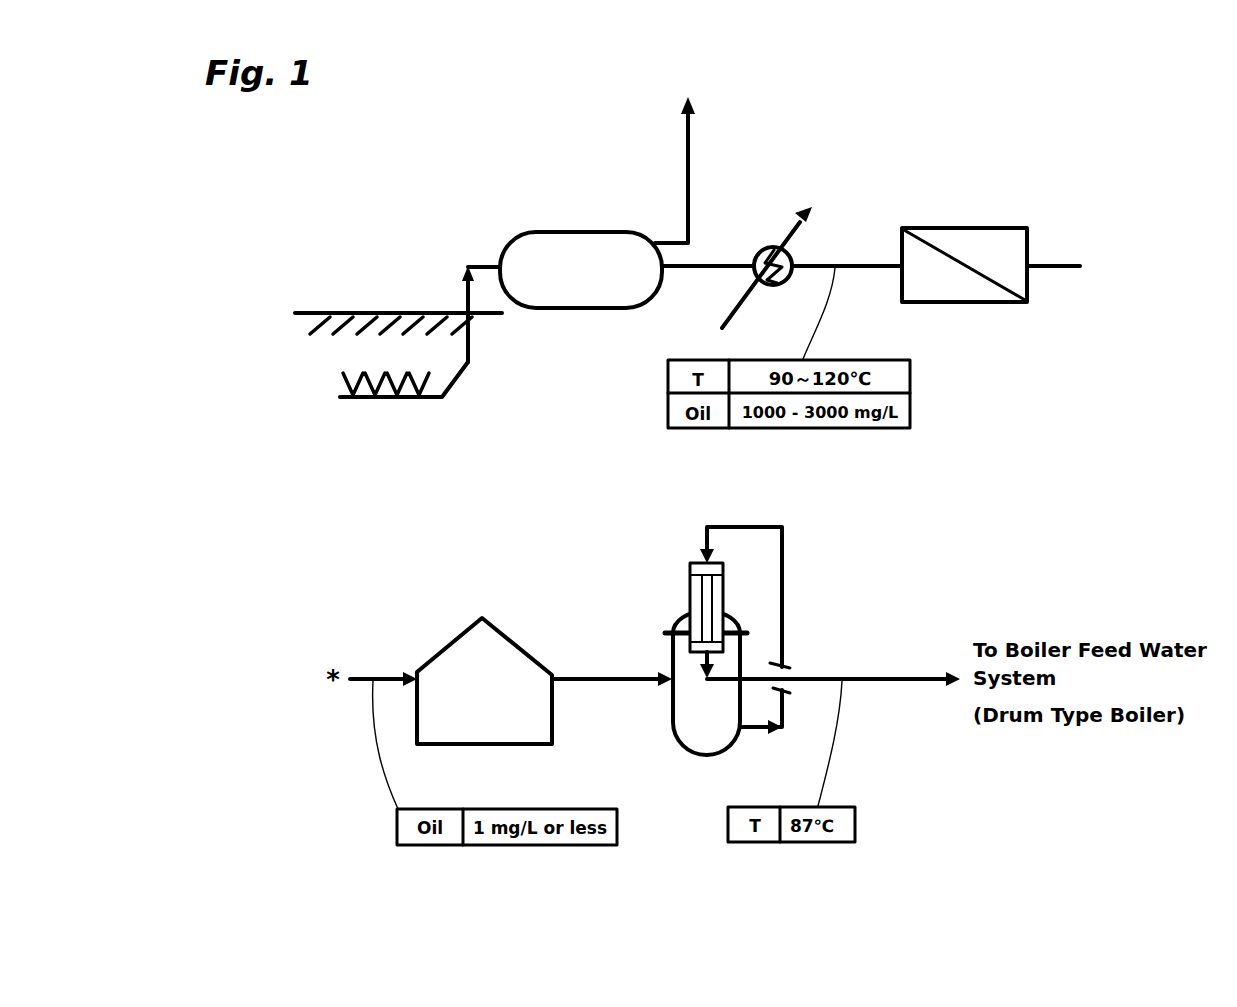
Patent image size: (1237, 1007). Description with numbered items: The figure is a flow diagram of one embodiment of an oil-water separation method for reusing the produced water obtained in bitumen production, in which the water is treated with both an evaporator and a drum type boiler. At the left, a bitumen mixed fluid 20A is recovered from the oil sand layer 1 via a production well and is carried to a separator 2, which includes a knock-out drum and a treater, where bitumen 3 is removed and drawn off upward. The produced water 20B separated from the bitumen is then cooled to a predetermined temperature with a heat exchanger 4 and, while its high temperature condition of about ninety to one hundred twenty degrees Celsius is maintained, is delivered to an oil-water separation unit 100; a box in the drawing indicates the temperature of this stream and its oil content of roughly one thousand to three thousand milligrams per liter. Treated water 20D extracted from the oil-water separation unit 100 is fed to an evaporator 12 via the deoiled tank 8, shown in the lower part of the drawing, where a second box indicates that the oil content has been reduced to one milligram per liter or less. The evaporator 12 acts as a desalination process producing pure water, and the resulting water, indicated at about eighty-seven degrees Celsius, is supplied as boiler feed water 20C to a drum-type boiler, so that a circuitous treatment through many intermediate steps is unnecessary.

The oil sand layer 1 is at (405, 362).
The separator 2 is at (547, 255).
The bitumen 3 is at (675, 157).
The heat exchanger 4 is at (770, 255).
The deoiled tank 8 is at (448, 672).
The evaporator 12 is at (684, 551).
The bitumen mixed fluid 20A is at (479, 263).
The produced water 20B is at (713, 262).
The boiler feed water 20C is at (930, 676).
The treated water 20D is at (1045, 271).
The oil-water separation unit 100 is at (957, 227).